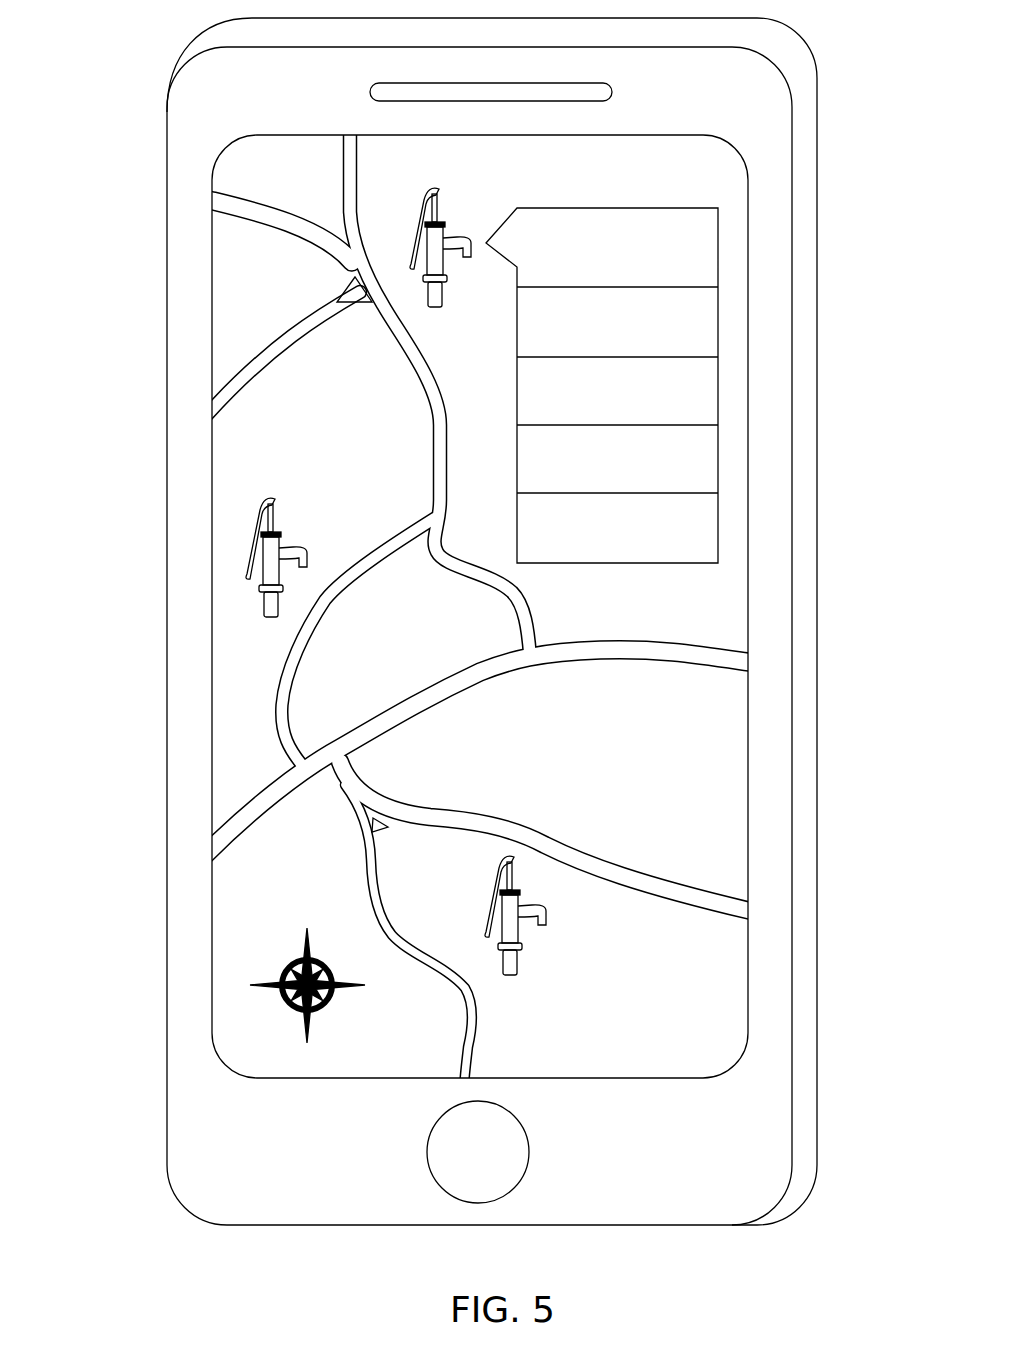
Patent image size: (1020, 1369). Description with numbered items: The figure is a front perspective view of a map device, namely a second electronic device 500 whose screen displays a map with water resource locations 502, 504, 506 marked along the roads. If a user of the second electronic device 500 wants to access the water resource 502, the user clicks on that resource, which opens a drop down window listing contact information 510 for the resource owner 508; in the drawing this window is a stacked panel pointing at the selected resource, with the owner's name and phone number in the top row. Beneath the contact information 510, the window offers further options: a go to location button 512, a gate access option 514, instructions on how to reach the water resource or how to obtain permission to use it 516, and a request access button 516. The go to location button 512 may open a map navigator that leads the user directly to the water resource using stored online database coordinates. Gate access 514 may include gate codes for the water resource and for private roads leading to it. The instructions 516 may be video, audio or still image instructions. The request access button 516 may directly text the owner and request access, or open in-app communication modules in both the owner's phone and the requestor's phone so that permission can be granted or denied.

The second electronic device 500 is at (88, 98).
The water resource location 502 is at (445, 232).
The water resource location 504 is at (280, 543).
The water resource location 506 is at (518, 937).
The resource owner 508 is at (653, 212).
The contact information 510 is at (714, 267).
The go to location button 512 is at (678, 327).
The gate access 514 is at (708, 393).
The instructions / request access button 516 is at (710, 462).